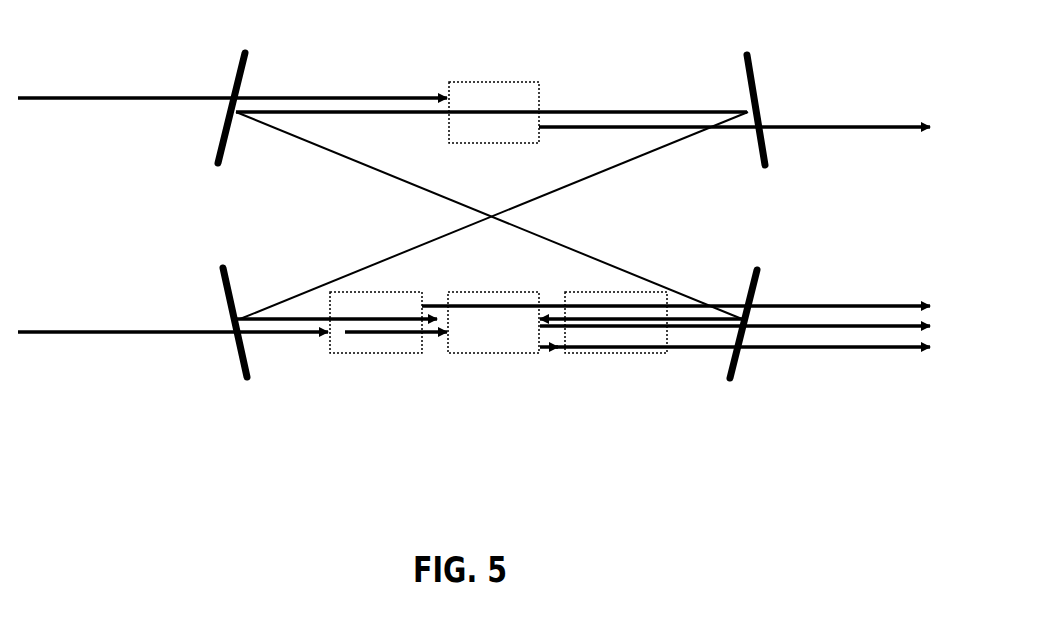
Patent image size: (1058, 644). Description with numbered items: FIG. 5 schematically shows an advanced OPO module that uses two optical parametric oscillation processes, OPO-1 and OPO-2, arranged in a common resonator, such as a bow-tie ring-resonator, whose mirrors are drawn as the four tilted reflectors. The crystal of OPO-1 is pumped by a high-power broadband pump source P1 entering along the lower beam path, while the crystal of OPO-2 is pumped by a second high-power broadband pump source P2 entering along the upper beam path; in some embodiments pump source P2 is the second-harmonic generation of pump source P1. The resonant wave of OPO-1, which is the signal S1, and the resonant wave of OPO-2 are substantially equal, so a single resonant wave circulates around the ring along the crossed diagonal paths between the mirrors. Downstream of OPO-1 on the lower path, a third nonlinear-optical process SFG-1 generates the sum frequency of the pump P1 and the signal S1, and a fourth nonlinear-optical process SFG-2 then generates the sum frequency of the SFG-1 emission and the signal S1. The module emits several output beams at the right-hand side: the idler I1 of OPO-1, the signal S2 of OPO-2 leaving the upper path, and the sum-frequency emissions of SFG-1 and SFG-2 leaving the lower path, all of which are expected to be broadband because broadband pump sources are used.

The first high-power broadband pump source P1 is at (173, 349).
The second high-power broadband pump source P2 is at (232, 83).
The first OPO process OPO-1 is at (376, 344).
The second OPO process OPO-2 is at (494, 96).
The third NLO process (first sum-frequency generation) SFG-1 is at (680, 354).
The fourth NLO process (second sum-frequency generation) SFG-2 is at (739, 335).
The resonant signal wave of OPO-1 S1 is at (580, 240).
The signal wave of OPO-2 S2 is at (734, 156).
The idler wave of OPO-1 I1 is at (676, 251).